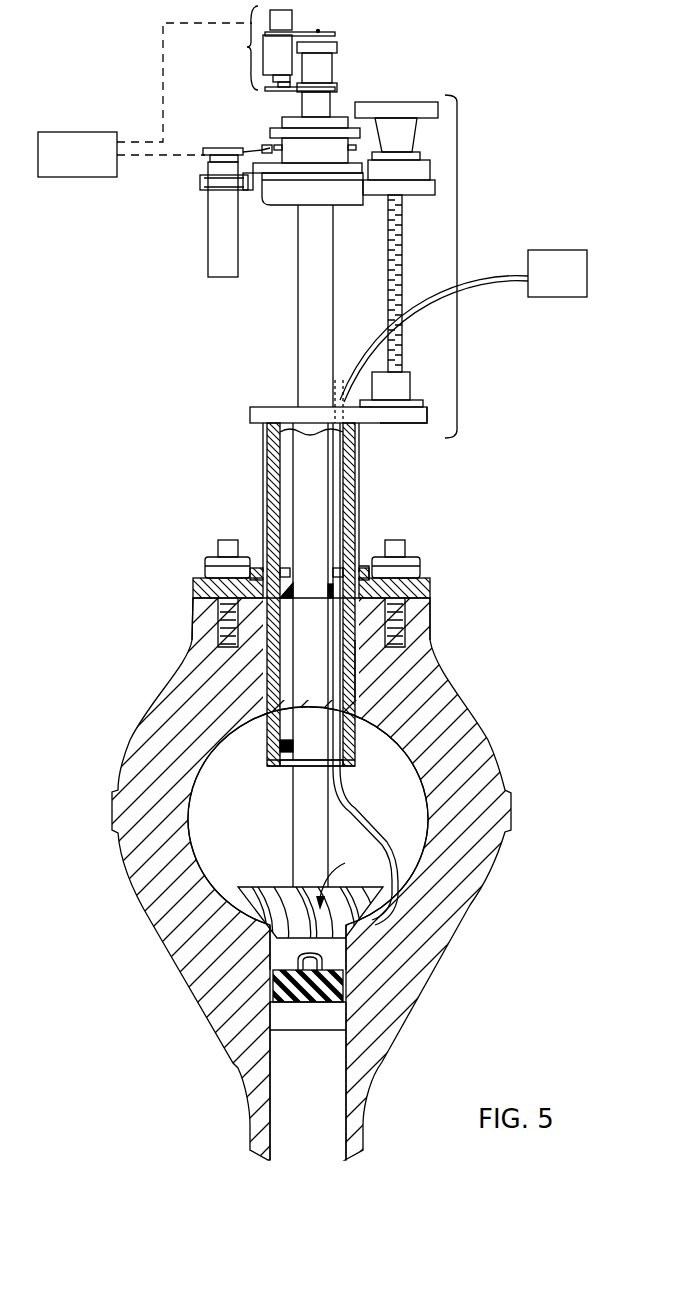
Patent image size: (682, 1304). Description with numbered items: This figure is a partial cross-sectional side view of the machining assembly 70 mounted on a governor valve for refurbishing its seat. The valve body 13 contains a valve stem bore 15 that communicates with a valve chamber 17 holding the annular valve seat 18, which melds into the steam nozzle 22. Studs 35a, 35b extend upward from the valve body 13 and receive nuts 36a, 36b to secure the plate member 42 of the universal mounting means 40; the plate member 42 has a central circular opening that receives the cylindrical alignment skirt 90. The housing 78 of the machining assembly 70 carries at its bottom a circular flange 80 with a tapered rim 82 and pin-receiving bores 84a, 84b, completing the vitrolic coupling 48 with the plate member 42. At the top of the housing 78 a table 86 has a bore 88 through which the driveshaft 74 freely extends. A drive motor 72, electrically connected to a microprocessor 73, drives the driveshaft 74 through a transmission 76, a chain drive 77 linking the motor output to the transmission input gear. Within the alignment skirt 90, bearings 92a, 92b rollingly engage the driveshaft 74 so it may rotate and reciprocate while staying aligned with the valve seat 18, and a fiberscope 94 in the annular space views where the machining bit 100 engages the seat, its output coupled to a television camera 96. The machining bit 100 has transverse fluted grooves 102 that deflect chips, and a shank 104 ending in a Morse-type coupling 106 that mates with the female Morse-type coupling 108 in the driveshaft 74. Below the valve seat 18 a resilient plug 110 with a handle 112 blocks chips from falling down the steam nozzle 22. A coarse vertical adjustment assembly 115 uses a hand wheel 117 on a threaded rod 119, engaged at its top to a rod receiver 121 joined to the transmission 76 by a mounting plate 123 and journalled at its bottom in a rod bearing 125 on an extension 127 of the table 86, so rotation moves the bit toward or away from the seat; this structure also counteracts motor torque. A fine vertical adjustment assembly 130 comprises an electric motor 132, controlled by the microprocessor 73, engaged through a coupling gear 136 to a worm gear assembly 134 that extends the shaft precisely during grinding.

The valve body 13 is at (140, 733).
The valve stem bore 15 is at (353, 690).
The valve chamber 17 is at (242, 819).
The annular valve seat 18 is at (255, 930).
The steam nozzle 22 is at (320, 1070).
The stud 35a is at (226, 622).
The stud 35b is at (400, 616).
The nut 36a is at (212, 568).
The nut 36b is at (402, 568).
The universal mounting means 40 is at (184, 588).
The plate member 42 is at (420, 593).
The vitrolic coupling 48 is at (374, 556).
The machining assembly 70 is at (146, 243).
The drive motor 72 is at (233, 243).
The microprocessor 73 is at (68, 130).
The driveshaft 74 is at (307, 305).
The transmission 76 is at (295, 157).
The chain drive 77 is at (258, 149).
The housing 78 is at (357, 492).
The circular flange 80 is at (364, 567).
The tapered rim 82 is at (258, 567).
The pin-receiving bore 84a is at (293, 591).
The pin-receiving bore 84b is at (355, 573).
The table 86 is at (282, 414).
The bore 88 is at (333, 405).
The cylindrical alignment skirt 90 is at (365, 672).
The bearing 92a is at (293, 605).
The bearing 92b is at (278, 750).
The fiberscope 94 is at (370, 828).
The television camera 96 is at (588, 267).
The machining bit 100 is at (343, 877).
The fluted grooves 102 is at (278, 886).
The shank 104 is at (300, 832).
The Morse-type coupling 106 is at (300, 770).
The female Morse-type coupling 108 is at (300, 752).
The plug 110 is at (275, 992).
The handle 112 is at (330, 960).
The coarse vertical adjustment assembly 115 is at (457, 293).
The hand wheel 117 is at (400, 133).
The threaded rod 119 is at (387, 268).
The rod receiver 121 is at (383, 175).
The mounting plate 123 is at (415, 191).
The rod bearing 125 is at (408, 386).
The extension 127 is at (398, 420).
The fine vertical adjustment assembly 130 is at (250, 47).
The electric motor 132 is at (285, 35).
The worm gear assembly 134 is at (323, 69).
The coupling gear 136 is at (286, 91).